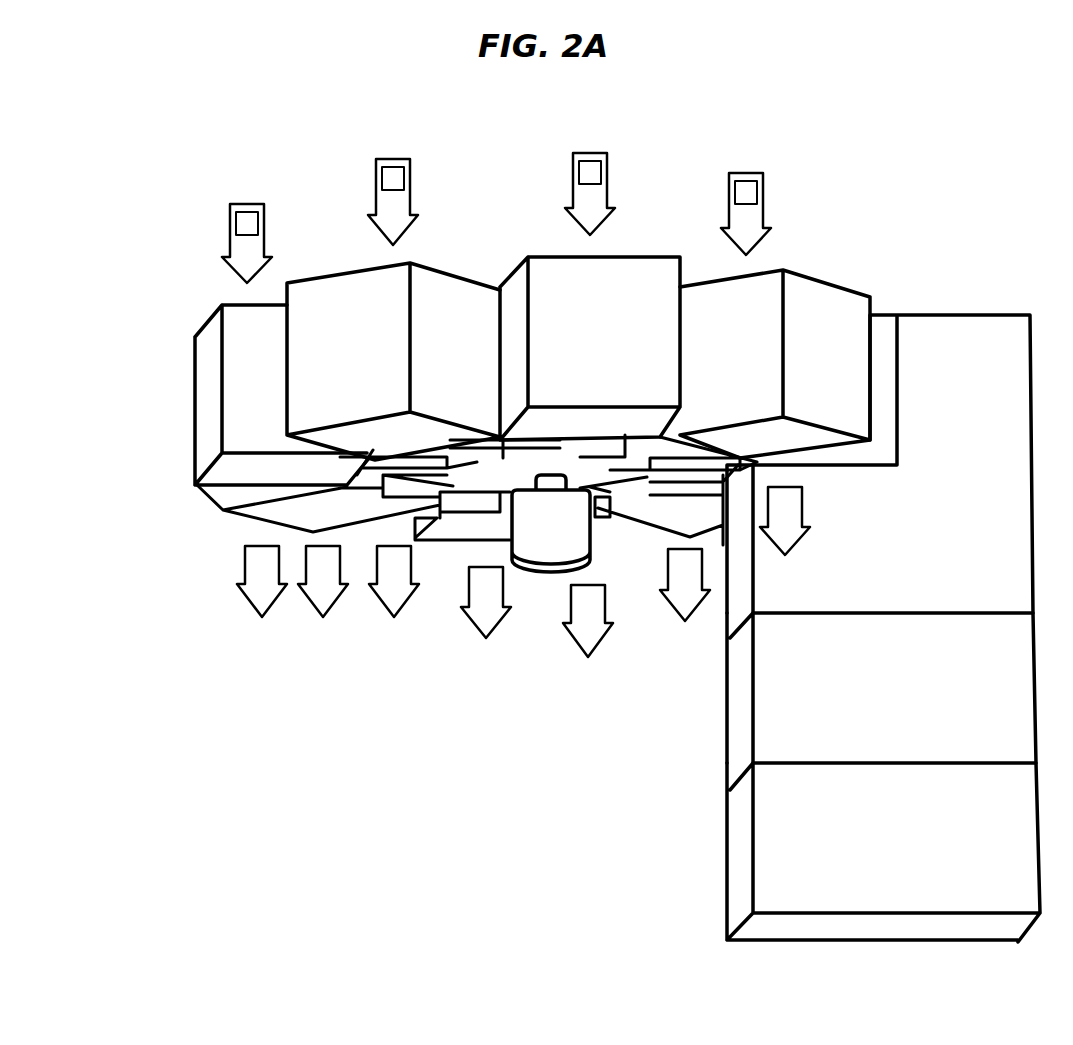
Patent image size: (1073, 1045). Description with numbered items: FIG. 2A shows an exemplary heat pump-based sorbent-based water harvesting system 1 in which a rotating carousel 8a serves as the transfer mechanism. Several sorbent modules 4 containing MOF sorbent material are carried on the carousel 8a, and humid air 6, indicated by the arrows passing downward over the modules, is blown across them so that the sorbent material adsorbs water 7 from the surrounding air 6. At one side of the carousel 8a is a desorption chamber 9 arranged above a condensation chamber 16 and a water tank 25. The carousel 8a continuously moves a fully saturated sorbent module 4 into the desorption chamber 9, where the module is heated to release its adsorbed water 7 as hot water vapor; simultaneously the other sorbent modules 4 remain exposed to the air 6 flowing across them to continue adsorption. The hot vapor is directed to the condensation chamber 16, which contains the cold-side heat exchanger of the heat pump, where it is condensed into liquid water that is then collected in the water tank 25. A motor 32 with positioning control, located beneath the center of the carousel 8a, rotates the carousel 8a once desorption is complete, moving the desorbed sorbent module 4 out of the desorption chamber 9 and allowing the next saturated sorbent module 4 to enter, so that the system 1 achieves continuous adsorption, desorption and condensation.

The sorbent-based water harvesting system 1 is at (61, 219).
The sorbent module 4 is at (230, 345).
The air 6 is at (516, 405).
The water 7 is at (496, 199).
The carousel 8a is at (476, 491).
The desorption chamber 9 is at (989, 368).
The condensation chamber 16 is at (997, 655).
The water tank 25 is at (1000, 803).
The motor 32 is at (538, 540).